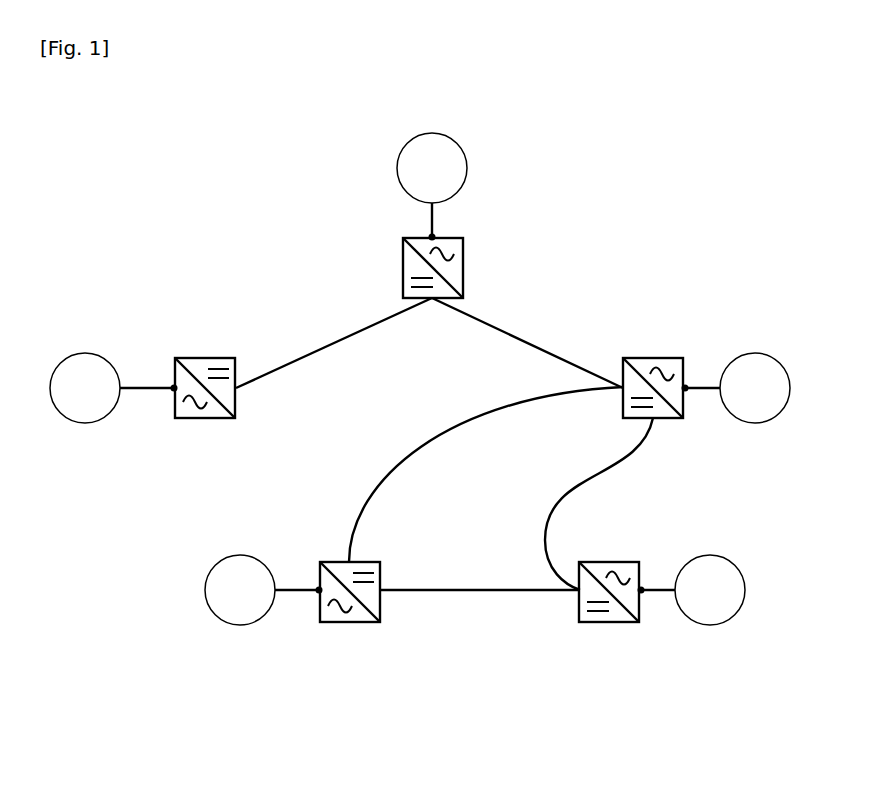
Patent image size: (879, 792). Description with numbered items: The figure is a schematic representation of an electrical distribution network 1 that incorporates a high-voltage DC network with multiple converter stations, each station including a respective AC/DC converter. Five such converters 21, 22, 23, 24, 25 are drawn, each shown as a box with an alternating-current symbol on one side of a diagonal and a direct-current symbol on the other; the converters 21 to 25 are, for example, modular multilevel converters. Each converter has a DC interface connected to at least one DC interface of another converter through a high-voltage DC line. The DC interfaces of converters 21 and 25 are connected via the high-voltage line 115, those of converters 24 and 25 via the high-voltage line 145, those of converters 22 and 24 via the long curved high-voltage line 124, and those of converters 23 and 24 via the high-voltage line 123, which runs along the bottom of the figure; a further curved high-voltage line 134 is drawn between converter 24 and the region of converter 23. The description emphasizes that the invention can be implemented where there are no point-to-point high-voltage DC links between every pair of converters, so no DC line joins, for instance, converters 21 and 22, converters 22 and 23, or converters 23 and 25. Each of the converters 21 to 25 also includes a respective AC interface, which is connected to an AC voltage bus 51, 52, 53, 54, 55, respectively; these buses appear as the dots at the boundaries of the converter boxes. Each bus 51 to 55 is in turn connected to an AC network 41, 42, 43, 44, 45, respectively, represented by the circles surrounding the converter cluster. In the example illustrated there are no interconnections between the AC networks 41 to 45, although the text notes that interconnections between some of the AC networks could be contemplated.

The electrical distribution network 1 is at (670, 153).
The converter 21 is at (210, 418).
The converter 22 is at (350, 620).
The converter 23 is at (608, 620).
The converter 24 is at (655, 418).
The converter 25 is at (403, 266).
The AC network 41 is at (85, 423).
The AC network 42 is at (240, 625).
The AC network 43 is at (710, 625).
The AC network 44 is at (755, 423).
The AC network 45 is at (397, 171).
The AC voltage bus 51 is at (173, 392).
The AC voltage bus 52 is at (318, 595).
The AC voltage bus 53 is at (643, 596).
The AC voltage bus 54 is at (688, 395).
The AC voltage bus 55 is at (428, 236).
The high-voltage line 115 is at (345, 335).
The high-voltage line 123 is at (478, 592).
The high-voltage line 124 is at (412, 455).
The high-voltage line 134 is at (551, 520).
The high-voltage line 145 is at (523, 330).